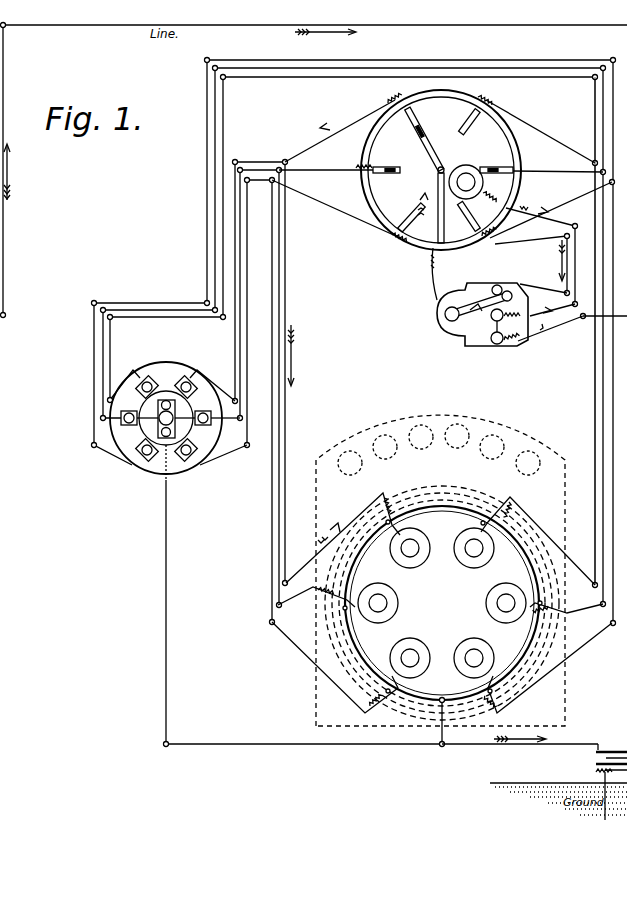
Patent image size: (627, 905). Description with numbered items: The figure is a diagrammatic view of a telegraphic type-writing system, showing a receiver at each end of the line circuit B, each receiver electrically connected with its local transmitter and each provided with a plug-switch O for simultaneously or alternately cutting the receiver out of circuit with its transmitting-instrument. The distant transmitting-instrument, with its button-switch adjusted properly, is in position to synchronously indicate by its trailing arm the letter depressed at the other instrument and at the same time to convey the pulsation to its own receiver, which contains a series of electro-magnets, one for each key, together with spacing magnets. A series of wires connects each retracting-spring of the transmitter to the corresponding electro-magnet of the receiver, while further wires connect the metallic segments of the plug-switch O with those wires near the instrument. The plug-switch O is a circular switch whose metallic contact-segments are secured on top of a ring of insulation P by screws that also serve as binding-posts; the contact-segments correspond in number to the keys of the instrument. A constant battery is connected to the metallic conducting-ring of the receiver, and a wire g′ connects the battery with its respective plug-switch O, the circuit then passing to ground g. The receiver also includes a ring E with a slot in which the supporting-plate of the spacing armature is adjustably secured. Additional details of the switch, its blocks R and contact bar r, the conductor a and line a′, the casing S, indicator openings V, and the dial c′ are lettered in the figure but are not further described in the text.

The line circuit B is at (314, 160).
The plug-switch O is at (135, 465).
The insulating ring P is at (167, 381).
The contact block R is at (171, 446).
The contact bar r is at (160, 412).
The wires a′ is at (595, 369).
The conductor a is at (603, 362).
The mechanical key-board S is at (440, 570).
The indicator openings V is at (439, 449).
The dial c′ is at (530, 646).
The wire g′ is at (166, 580).
The ground conductor g is at (445, 742).
The ring E is at (611, 770).